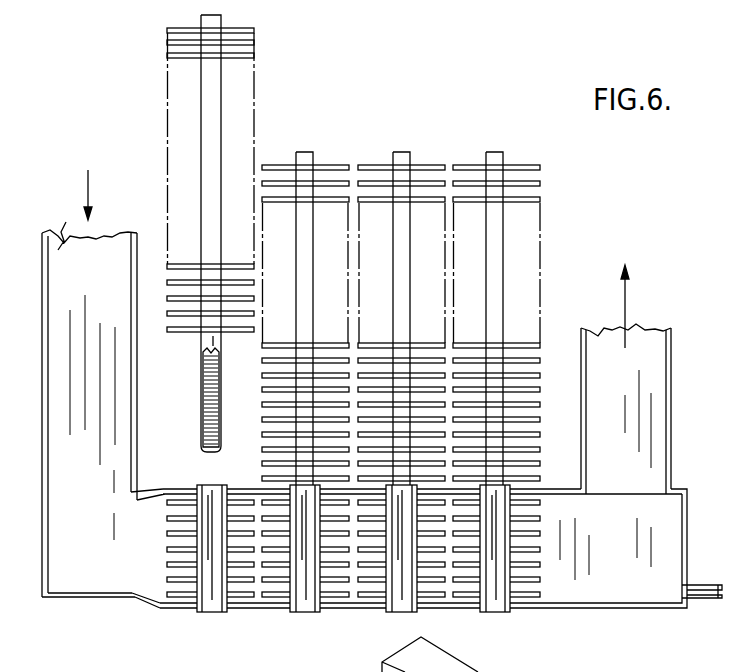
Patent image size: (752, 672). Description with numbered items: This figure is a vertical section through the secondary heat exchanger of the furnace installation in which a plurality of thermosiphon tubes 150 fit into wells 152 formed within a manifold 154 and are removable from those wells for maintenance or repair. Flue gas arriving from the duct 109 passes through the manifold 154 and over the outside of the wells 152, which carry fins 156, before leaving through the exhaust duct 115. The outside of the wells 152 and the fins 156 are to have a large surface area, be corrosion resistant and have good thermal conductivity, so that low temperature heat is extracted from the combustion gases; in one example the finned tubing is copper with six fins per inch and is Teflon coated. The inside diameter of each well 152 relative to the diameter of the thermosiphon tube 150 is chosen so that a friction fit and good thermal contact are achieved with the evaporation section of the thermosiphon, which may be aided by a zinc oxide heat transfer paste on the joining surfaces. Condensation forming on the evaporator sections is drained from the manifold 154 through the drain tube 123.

The duct 109 is at (62, 265).
The exhaust duct 115 is at (671, 372).
The drain tube 123 is at (705, 600).
The thermosiphon tube 150 is at (204, 406).
The well 152 is at (200, 487).
The manifold 154 is at (617, 585).
The fins 156 is at (254, 56).